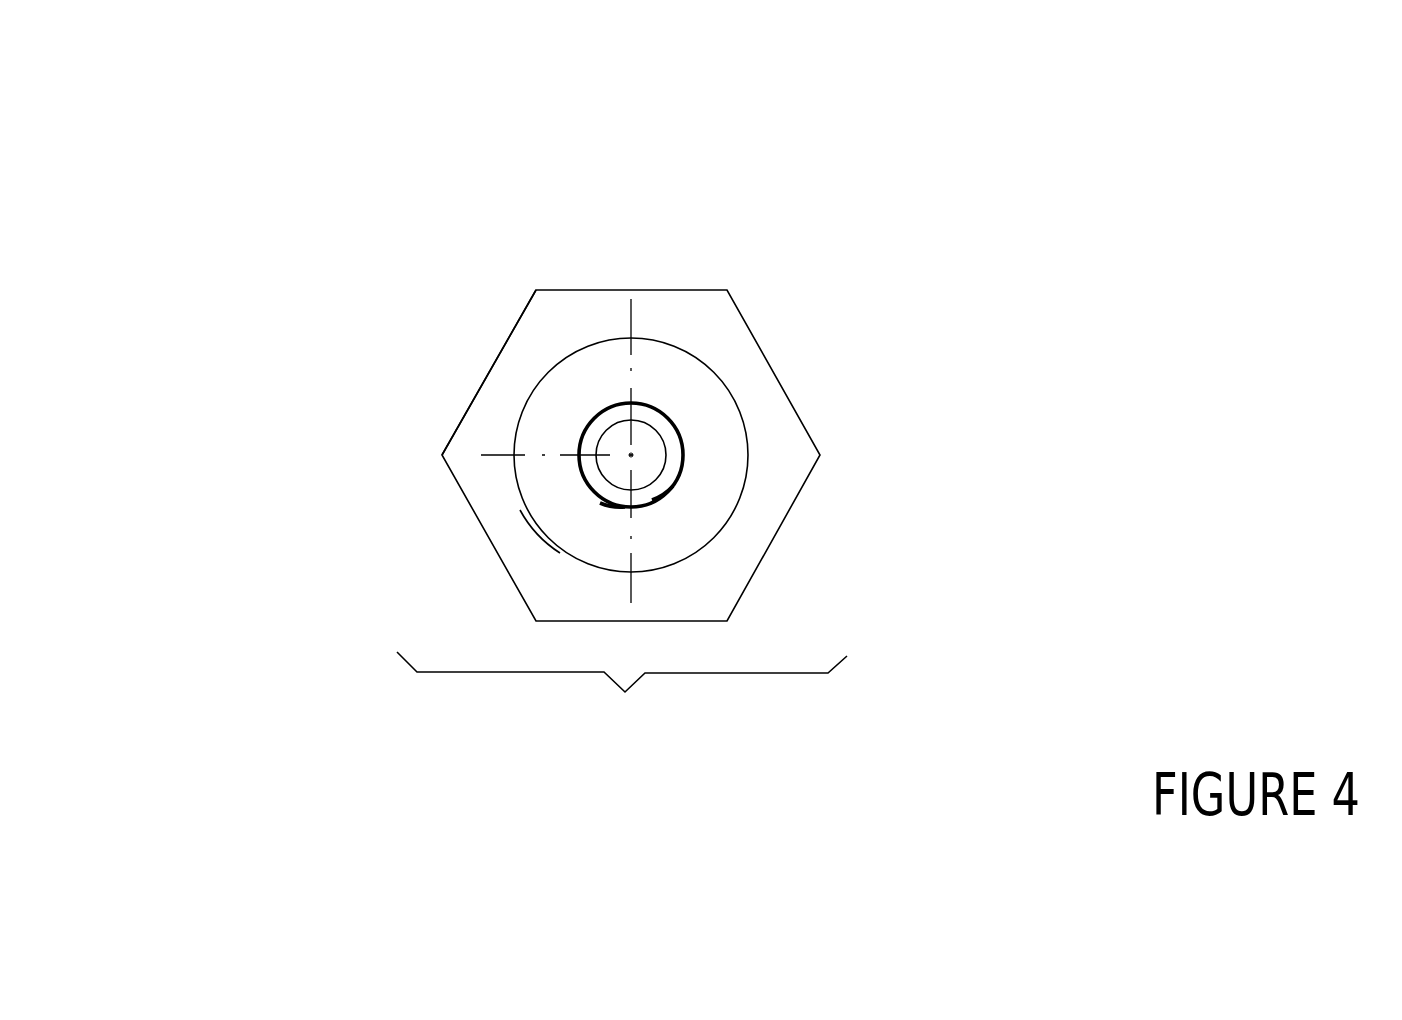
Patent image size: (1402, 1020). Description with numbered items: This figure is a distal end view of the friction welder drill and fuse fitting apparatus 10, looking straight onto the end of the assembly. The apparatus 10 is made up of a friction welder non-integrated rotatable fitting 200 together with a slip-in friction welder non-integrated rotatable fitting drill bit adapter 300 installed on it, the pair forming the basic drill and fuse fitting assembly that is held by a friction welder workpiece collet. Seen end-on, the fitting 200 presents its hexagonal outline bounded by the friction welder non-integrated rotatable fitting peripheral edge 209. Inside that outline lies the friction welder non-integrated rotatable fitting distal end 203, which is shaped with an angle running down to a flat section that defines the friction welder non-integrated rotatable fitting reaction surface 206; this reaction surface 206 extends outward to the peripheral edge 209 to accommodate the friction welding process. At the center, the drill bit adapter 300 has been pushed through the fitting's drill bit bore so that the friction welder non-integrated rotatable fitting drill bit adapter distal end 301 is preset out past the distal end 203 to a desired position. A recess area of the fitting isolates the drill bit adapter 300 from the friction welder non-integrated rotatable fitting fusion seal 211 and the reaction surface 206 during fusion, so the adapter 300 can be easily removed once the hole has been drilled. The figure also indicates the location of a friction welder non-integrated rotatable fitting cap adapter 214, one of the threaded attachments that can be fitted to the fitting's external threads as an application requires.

The friction welder drill and fuse fitting apparatus 10 is at (622, 515).
The friction welder non-integrated rotatable fitting 200 is at (575, 337).
The friction welder non-integrated rotatable fitting distal end 203 is at (362, 350).
The friction welder non-integrated rotatable fitting reaction surface 206 is at (384, 327).
The friction welder non-integrated rotatable fitting peripheral edge 209 is at (419, 278).
The friction welder non-integrated rotatable fitting fusion seal 211 is at (869, 301).
The friction welder non-integrated rotatable fitting cap adapter 214 is at (630, 288).
The friction welder non-integrated rotatable fitting drill bit adapter 300 is at (747, 296).
The friction welder non-integrated rotatable fitting drill bit adapter distal end 301 is at (810, 279).